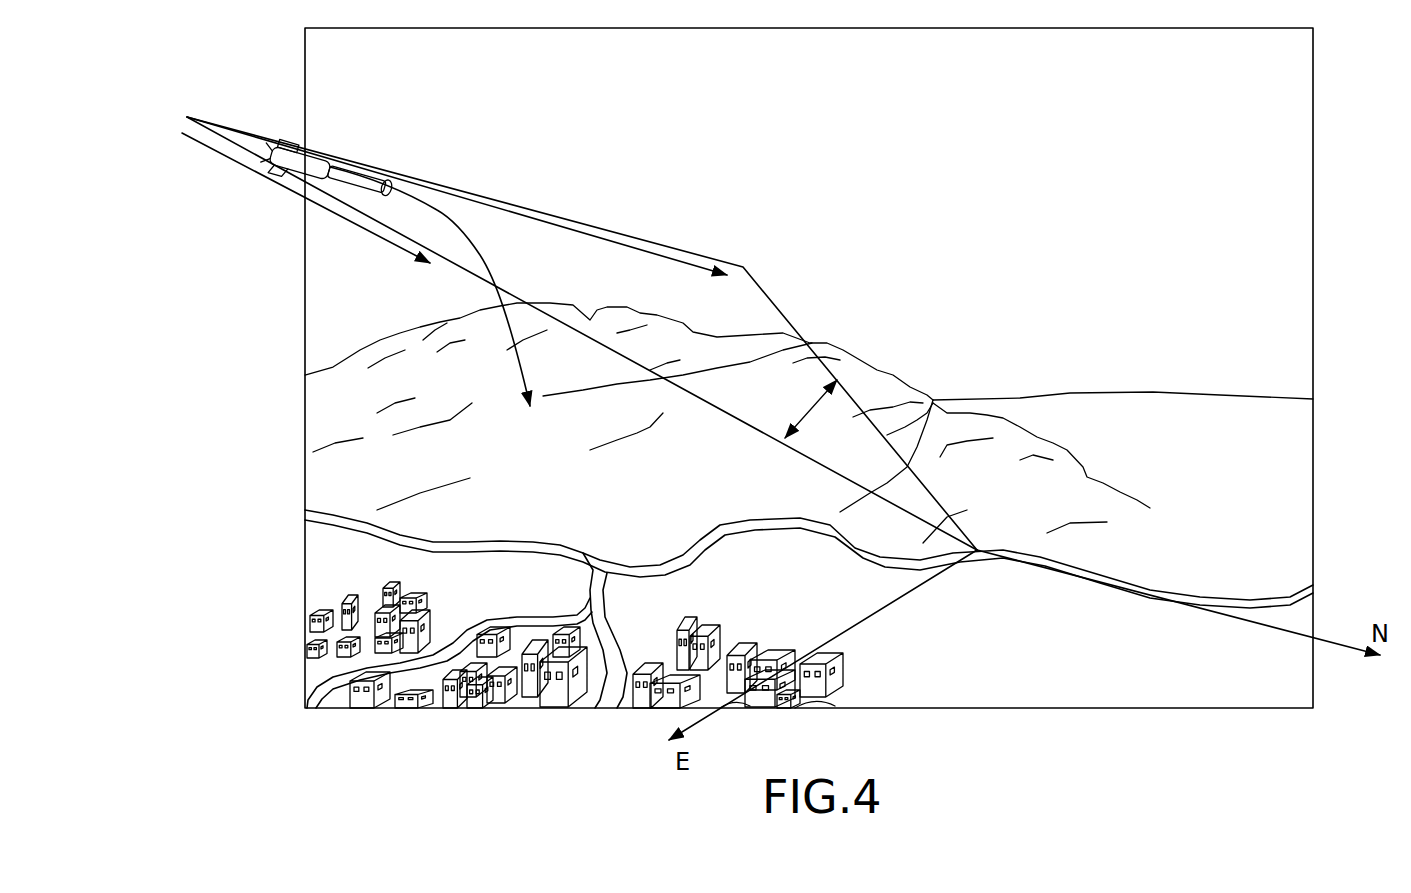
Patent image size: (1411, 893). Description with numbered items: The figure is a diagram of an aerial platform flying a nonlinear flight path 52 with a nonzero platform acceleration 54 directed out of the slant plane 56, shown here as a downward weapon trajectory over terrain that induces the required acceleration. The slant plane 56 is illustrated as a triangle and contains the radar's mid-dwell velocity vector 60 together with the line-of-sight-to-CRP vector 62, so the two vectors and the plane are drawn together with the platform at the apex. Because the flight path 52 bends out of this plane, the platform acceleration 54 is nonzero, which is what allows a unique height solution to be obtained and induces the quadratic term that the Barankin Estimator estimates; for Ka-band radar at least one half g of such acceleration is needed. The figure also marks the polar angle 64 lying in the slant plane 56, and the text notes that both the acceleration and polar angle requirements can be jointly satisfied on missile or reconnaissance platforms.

The nonlinear flight path 52 is at (571, 295).
The platform acceleration 54 is at (545, 396).
The slant plane 56 is at (938, 400).
The mid-dwell velocity vector 60 is at (660, 255).
The line-of-sight-to-CRP vector 62 is at (378, 238).
The polar angle 64 is at (777, 388).